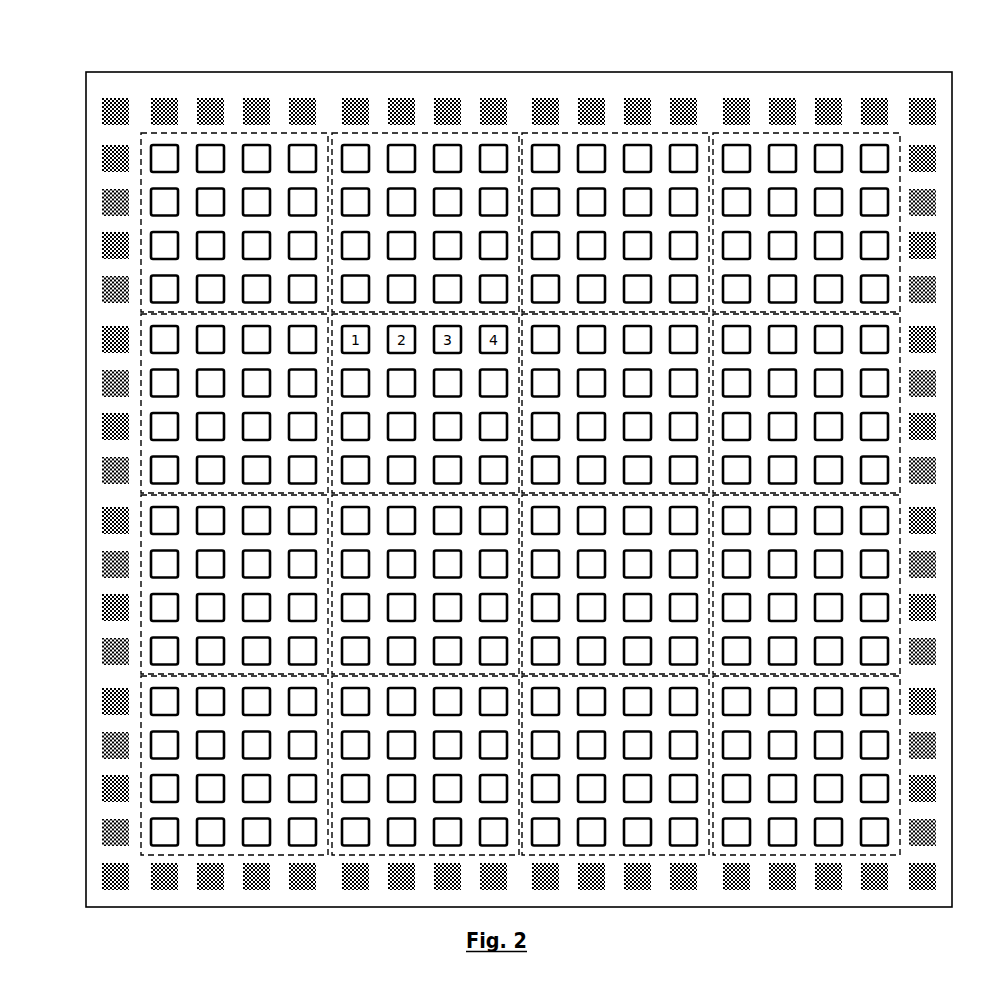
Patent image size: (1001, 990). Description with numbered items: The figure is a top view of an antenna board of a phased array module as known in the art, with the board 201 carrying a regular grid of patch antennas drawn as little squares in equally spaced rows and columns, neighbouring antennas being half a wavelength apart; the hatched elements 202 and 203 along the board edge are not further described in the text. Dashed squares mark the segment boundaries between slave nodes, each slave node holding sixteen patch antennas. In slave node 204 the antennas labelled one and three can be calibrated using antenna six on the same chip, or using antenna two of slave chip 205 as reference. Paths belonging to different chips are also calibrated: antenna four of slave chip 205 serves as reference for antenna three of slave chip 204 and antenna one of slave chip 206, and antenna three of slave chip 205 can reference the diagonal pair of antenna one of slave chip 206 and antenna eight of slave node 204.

The semiconductor die 201 is at (192, 72).
The bond pad 202 is at (207, 107).
The bond pad 203 is at (350, 117).
The slave node 204 is at (142, 145).
The slave chip 205 is at (140, 327).
The slave chip 206 is at (412, 133).